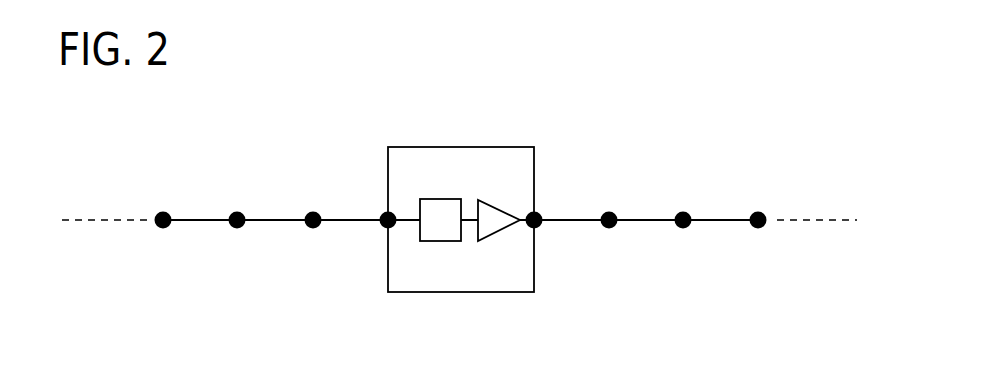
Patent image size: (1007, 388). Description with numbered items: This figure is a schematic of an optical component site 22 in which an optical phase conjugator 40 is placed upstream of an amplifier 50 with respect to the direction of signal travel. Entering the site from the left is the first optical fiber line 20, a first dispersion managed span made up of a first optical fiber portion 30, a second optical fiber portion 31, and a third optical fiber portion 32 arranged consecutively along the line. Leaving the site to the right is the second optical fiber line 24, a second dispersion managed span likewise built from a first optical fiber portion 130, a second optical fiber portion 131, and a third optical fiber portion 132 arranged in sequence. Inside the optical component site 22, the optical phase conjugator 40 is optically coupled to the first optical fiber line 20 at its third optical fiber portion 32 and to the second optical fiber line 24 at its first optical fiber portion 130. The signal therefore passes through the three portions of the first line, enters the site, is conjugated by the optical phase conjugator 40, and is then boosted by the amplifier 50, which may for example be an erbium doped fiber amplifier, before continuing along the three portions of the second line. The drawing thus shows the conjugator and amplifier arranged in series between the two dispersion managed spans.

The first optical fiber line 20 is at (272, 184).
The optical component site 22 is at (458, 205).
The second optical fiber line 24 is at (646, 185).
The first optical fiber portion 30 is at (198, 222).
The second optical fiber portion 31 is at (276, 222).
The third optical fiber portion 32 is at (354, 222).
The optical phase conjugator 40 is at (438, 241).
The amplifier 50 is at (498, 232).
The first optical fiber portion 130 is at (560, 222).
The second optical fiber portion 131 is at (634, 222).
The third optical fiber portion 132 is at (708, 222).